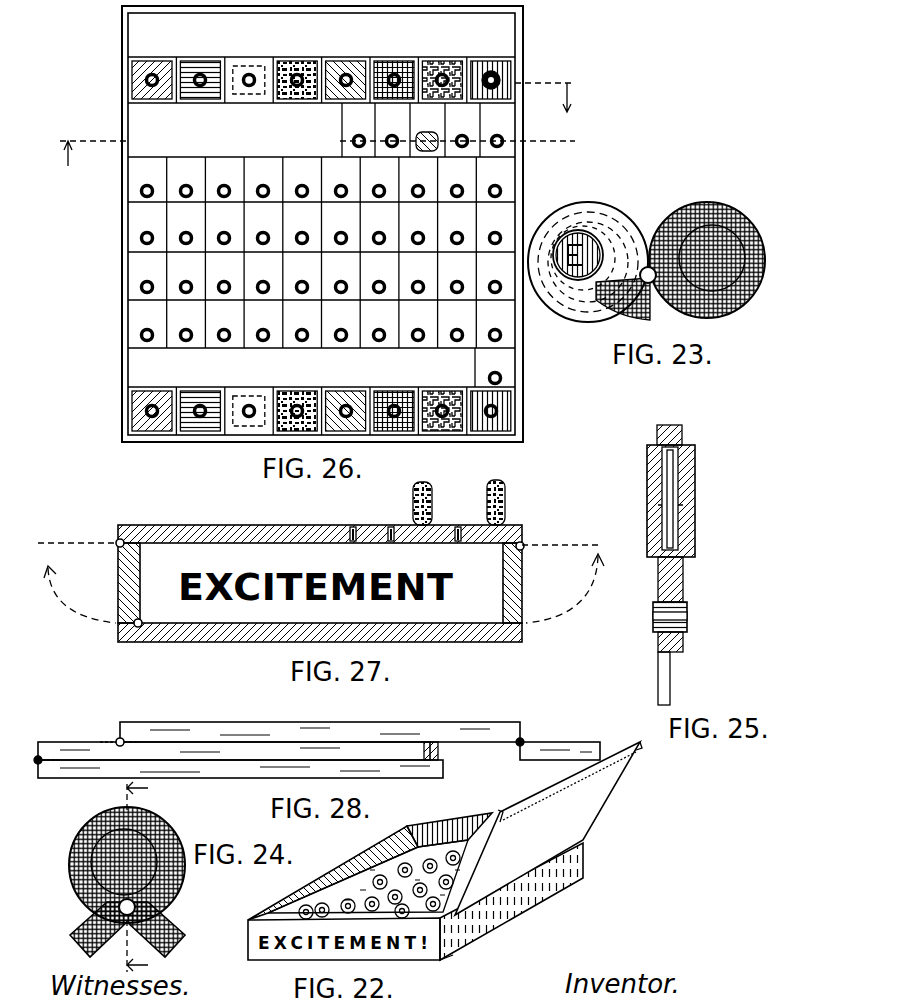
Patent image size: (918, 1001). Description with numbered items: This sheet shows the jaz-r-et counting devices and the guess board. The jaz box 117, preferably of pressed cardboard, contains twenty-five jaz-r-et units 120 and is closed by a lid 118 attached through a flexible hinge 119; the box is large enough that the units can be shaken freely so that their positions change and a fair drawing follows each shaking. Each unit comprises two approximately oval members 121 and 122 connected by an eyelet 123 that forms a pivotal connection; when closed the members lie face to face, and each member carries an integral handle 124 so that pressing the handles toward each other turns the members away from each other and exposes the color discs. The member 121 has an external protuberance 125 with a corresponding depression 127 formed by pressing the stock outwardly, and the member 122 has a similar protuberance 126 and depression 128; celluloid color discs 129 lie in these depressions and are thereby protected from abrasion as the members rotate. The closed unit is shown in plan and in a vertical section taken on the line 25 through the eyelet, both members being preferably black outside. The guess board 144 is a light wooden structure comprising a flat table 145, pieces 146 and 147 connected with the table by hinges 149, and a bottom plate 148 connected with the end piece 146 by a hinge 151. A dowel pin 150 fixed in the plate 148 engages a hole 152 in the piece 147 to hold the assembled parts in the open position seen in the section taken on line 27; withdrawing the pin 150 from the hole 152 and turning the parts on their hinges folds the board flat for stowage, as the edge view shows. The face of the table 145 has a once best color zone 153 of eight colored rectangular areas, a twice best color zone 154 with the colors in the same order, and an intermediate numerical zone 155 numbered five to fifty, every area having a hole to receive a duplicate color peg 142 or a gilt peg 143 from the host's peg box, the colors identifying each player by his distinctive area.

In FIG. 24, the section line 25— 25 is at (148, 878).
In FIG. 26, the section line 27— 27 is at (317, 137).
In FIG. 22, the box 117 is at (511, 901).
In FIG. 22, the lid 118 is at (548, 828).
In FIG. 22, the flexible hinge 119 is at (446, 922).
In FIG. 24, the disc game piece 120 is at (125, 880).
In FIG. 22, the disc game piece 120 is at (436, 862).
In FIG. 23, the oval member 121 is at (700, 208).
In FIG. 25, the oval member 121 is at (685, 444).
In FIG. 24, the oval member 121 is at (78, 842).
In FIG. 23, the oval member 122 is at (588, 215).
In FIG. 25, the oval member 122 is at (664, 437).
In FIG. 23, the eyelet 123 is at (648, 285).
In FIG. 25, the eyelet 123 is at (684, 614).
In FIG. 24, the eyelet 123 is at (138, 910).
In FIG. 23, the handle 124 is at (606, 302).
In FIG. 25, the handle 124 is at (664, 676).
In FIG. 24, the handle 124 is at (92, 931).
In FIG. 23, the external protuberance 125 is at (738, 236).
In FIG. 25, the external protuberance 125 is at (692, 494).
In FIG. 24, the external protuberance 125 is at (168, 826).
In FIG. 25, the protuberance 126 is at (664, 480).
In FIG. 25, the depression 127 is at (676, 528).
In FIG. 23, the depression 128 is at (600, 260).
In FIG. 25, the depression 128 is at (654, 460).
In FIG. 23, the color disc 129 is at (590, 245).
In FIG. 25, the color disc 129 is at (690, 504).
In FIG. 26, the duplicate color peg 142 is at (440, 135).
In FIG. 27, the duplicate color peg 142 is at (414, 500).
In FIG. 26, the gilt peg 143 is at (500, 80).
In FIG. 27, the gilt peg 143 is at (488, 512).
In FIG. 26, the guess board 144 is at (322, 224).
In FIG. 26, the flat table 145 is at (522, 40).
In FIG. 27, the flat table 145 is at (242, 527).
In FIG. 28, the flat table 145 is at (160, 724).
In FIG. 27, the end piece 146 is at (128, 585).
In FIG. 28, the end piece 146 is at (92, 750).
In FIG. 27, the piece 147 is at (505, 590).
In FIG. 28, the piece 147 is at (582, 750).
In FIG. 27, the bottom plate 148 is at (330, 626).
In FIG. 28, the bottom plate 148 is at (250, 768).
In FIG. 27, the hinge 149 is at (116, 542).
In FIG. 28, the hinge 149 is at (120, 738).
In FIG. 28, the dowel pin 150 is at (432, 744).
In FIG. 27, the hinge 151 is at (142, 621).
In FIG. 28, the hinge 151 is at (37, 756).
In FIG. 27, the hole 152 is at (538, 594).
In FIG. 26, the once best color zone 153 is at (136, 40).
In FIG. 26, the twice best color zone 154 is at (142, 374).
In FIG. 26, the numerical zone 155 is at (140, 132).